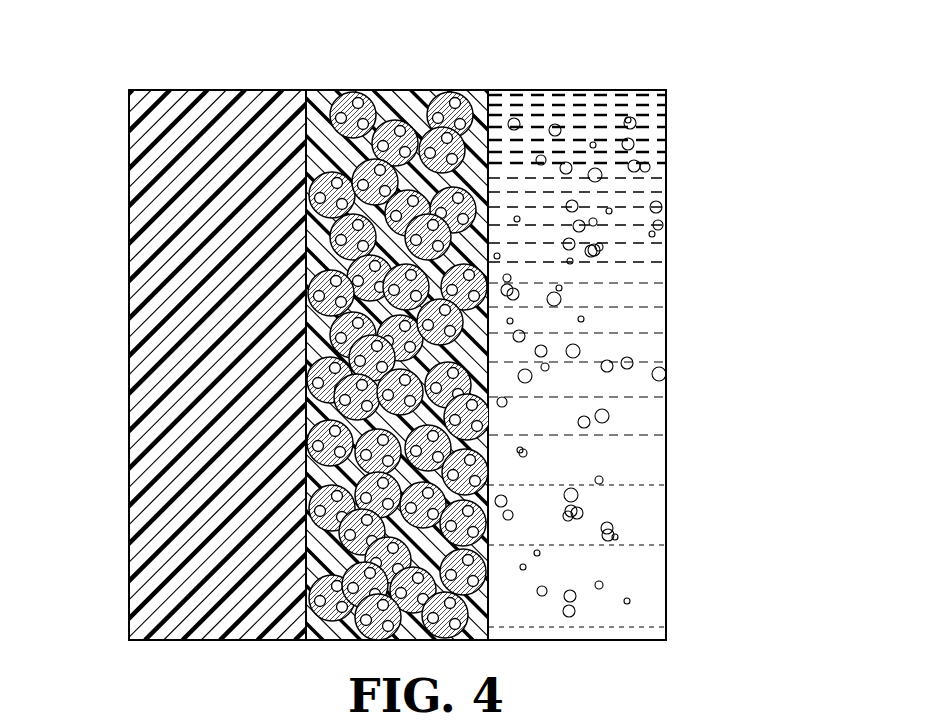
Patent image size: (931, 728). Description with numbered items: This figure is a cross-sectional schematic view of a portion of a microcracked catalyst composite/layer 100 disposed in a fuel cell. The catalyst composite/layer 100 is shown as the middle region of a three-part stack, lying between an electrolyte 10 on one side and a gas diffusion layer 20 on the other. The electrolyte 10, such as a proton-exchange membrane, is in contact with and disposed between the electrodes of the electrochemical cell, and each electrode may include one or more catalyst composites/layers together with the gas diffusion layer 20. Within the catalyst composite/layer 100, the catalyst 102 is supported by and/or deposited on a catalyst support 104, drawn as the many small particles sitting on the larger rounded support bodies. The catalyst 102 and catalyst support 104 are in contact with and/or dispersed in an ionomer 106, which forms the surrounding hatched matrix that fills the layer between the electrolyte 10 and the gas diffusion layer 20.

The microcracked catalyst composite/layer 100 is at (722, 55).
The electrolyte 10 is at (172, 165).
The gas diffusion layer 20 is at (612, 178).
The catalyst 102 is at (310, 524).
The catalyst support 104 is at (325, 327).
The ionomer 106 is at (313, 243).